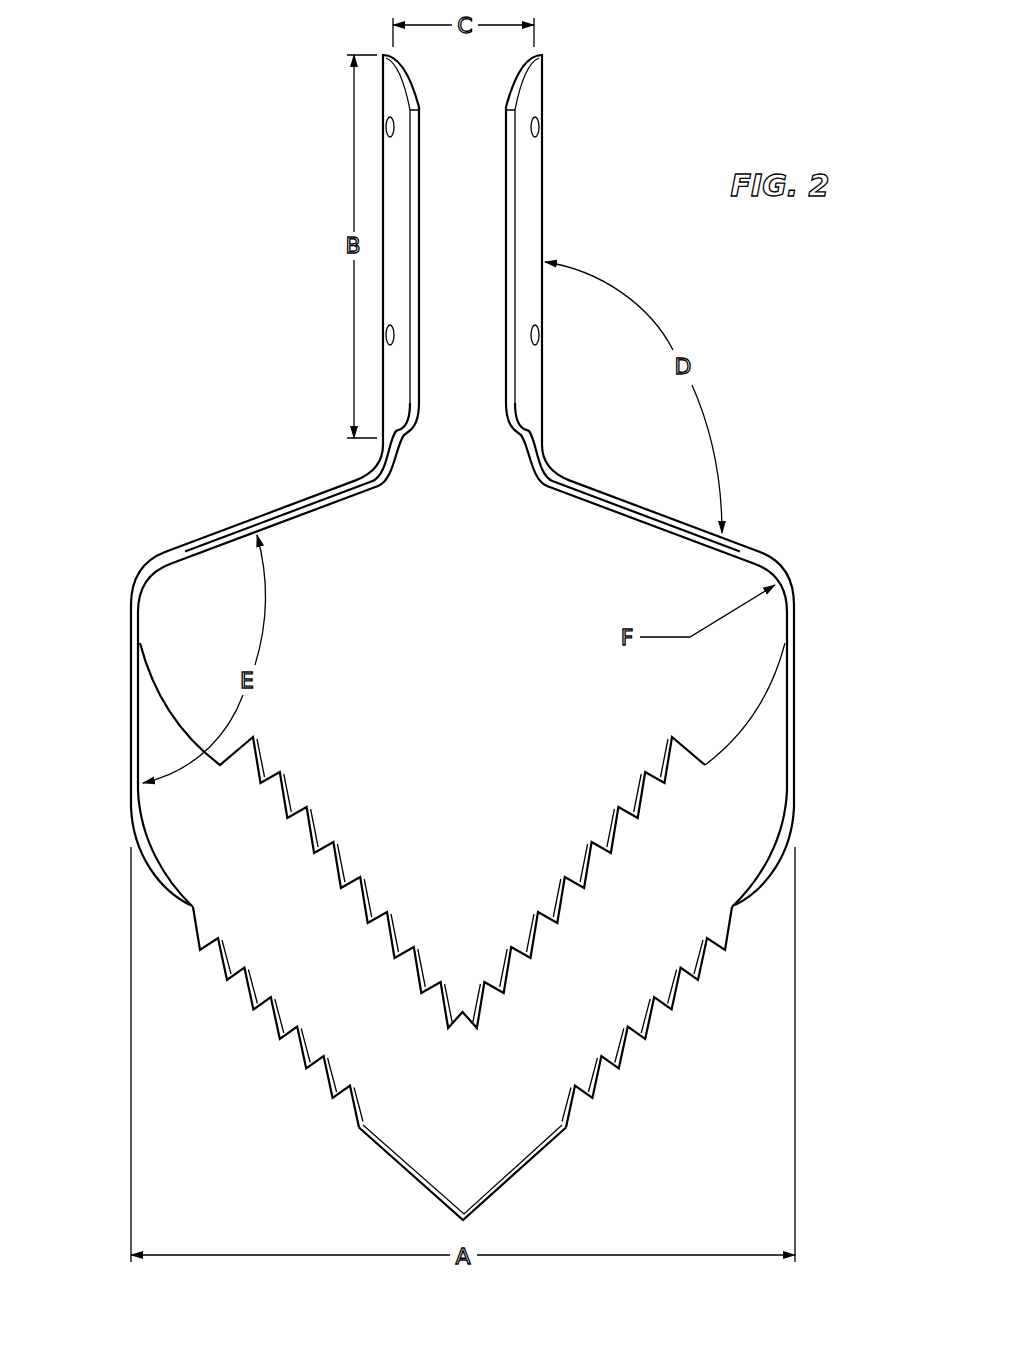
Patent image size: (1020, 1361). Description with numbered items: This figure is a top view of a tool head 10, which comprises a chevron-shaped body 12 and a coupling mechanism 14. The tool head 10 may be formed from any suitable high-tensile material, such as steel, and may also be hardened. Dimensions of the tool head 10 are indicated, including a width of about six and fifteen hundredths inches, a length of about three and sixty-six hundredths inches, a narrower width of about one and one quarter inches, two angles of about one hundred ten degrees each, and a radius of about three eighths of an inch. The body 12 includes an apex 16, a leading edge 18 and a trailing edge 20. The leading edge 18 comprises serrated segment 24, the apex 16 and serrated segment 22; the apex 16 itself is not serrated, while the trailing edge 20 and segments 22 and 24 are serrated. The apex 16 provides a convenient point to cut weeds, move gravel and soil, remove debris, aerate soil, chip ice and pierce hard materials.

The tool head 10 is at (454, 633).
The chevron-shaped body 12 is at (763, 533).
The coupling mechanism 14 is at (535, 201).
The apex 16 is at (405, 1183).
The leading edge 18 is at (315, 1116).
The trailing edge 20 is at (397, 917).
The serrated segment 22 is at (255, 1035).
The serrated segment 24 is at (672, 1035).